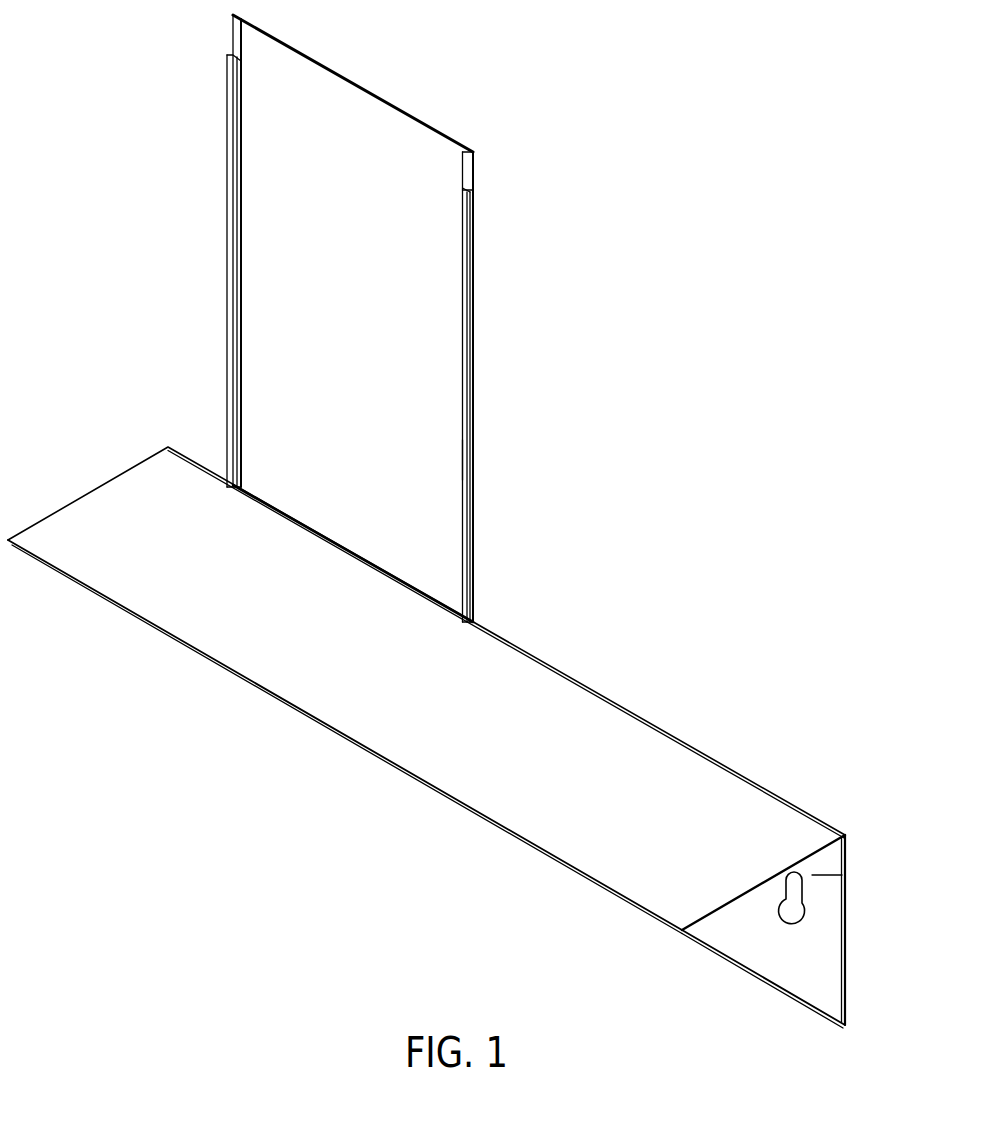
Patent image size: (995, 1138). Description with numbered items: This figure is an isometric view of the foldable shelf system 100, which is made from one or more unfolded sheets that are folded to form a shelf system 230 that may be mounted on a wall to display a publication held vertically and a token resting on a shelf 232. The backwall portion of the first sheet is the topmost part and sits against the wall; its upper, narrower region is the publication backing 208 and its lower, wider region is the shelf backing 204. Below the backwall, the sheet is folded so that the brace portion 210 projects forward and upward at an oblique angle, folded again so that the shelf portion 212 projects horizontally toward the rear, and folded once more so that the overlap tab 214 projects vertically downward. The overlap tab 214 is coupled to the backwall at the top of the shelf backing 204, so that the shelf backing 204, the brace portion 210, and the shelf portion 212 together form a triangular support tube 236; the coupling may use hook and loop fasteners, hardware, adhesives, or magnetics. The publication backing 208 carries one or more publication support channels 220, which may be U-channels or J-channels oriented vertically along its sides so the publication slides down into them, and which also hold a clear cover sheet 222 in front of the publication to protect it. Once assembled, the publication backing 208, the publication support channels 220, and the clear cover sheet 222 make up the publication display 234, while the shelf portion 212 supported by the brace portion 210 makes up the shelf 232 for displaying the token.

The foldable shelf system 100 is at (702, 327).
The shelf backing 204 is at (815, 962).
The publication backing 208 is at (475, 176).
The brace portion 210 is at (752, 977).
The shelf portion 212 is at (522, 803).
The overlap tab 214 is at (832, 860).
The publication support channels 220 is at (227, 262).
The clear cover sheet 222 is at (373, 140).
The shelf system 230 is at (737, 590).
The shelf 232 is at (123, 510).
The publication display 234 is at (437, 460).
The triangular support tube 236 is at (862, 832).